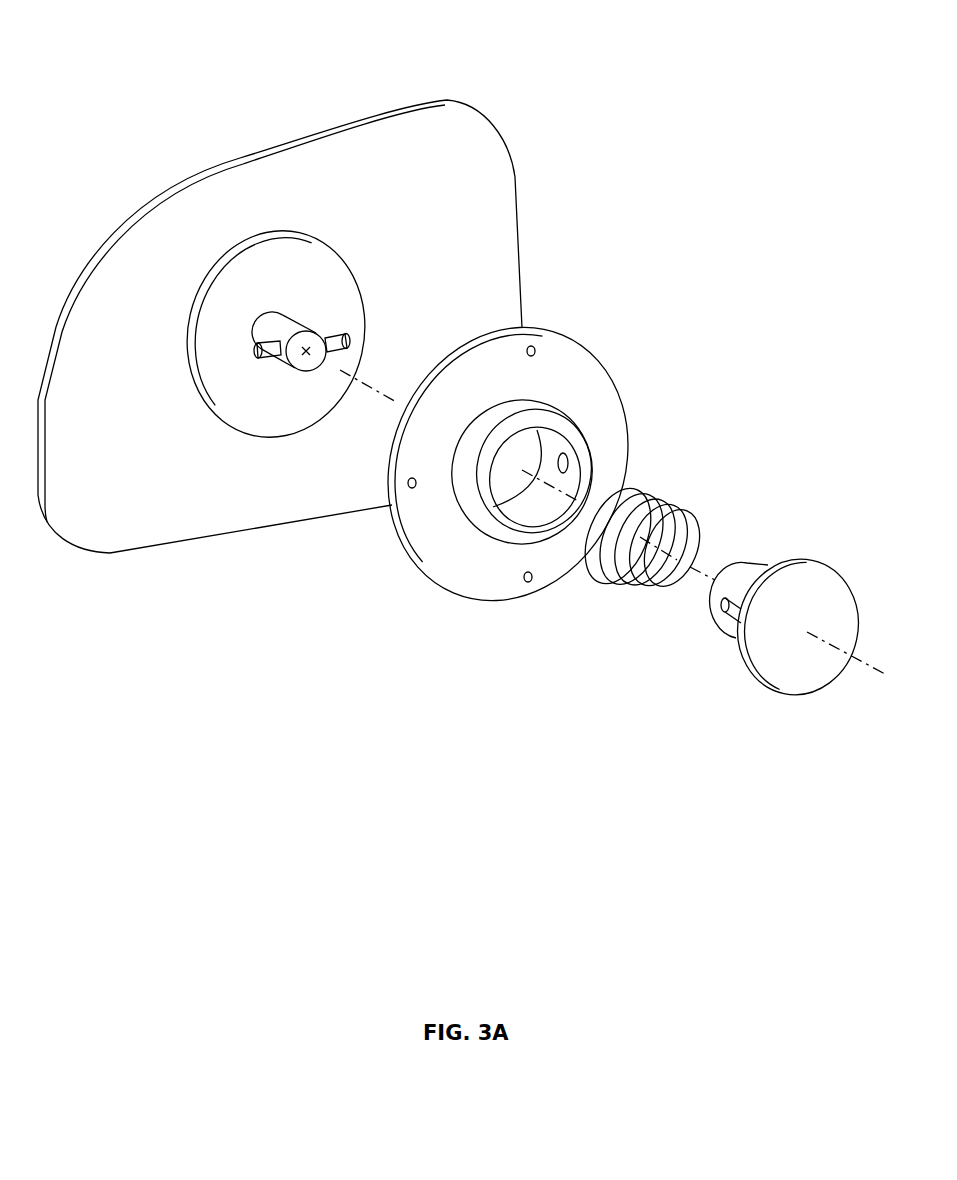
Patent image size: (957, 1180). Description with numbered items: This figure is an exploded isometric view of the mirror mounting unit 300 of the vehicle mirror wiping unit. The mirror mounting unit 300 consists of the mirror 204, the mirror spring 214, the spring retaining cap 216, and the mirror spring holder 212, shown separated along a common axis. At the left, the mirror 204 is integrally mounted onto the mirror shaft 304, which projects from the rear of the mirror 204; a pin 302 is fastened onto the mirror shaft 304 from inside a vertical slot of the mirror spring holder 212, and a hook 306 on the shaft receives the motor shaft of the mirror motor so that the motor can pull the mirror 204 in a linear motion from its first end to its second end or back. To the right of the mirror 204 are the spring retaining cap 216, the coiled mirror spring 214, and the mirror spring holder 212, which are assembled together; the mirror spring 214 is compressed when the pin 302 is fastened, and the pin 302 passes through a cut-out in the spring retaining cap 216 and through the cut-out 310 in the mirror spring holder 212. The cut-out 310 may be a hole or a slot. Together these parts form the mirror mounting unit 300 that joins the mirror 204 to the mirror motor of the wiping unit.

The mirror 204 is at (308, 140).
The pin 302 is at (374, 392).
The mirror shaft 304 is at (278, 330).
The hook 306 is at (308, 347).
The spring retaining cap 216 is at (413, 550).
The mirror spring 214 is at (605, 575).
The mirror spring holder 212 is at (777, 671).
The cut-out in the mirror spring holder 310 is at (727, 622).
The mirror mounting unit 300 is at (567, 865).